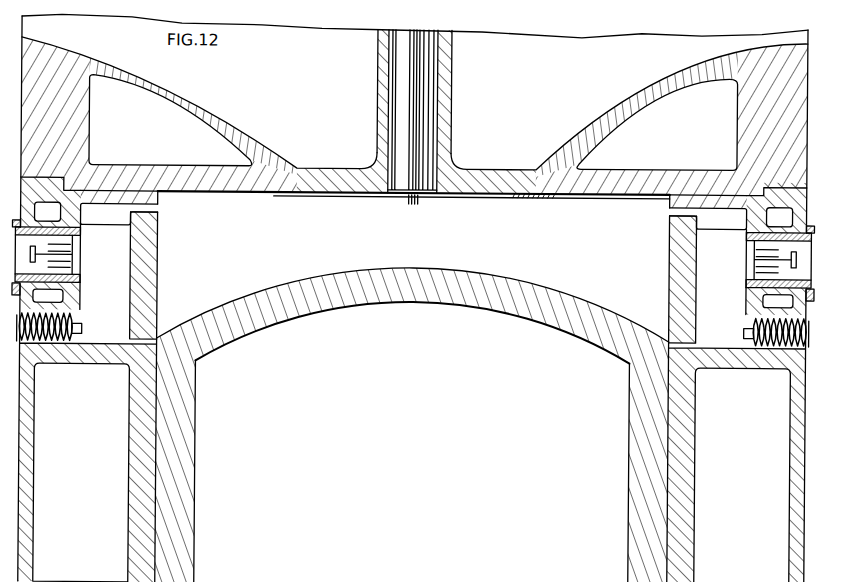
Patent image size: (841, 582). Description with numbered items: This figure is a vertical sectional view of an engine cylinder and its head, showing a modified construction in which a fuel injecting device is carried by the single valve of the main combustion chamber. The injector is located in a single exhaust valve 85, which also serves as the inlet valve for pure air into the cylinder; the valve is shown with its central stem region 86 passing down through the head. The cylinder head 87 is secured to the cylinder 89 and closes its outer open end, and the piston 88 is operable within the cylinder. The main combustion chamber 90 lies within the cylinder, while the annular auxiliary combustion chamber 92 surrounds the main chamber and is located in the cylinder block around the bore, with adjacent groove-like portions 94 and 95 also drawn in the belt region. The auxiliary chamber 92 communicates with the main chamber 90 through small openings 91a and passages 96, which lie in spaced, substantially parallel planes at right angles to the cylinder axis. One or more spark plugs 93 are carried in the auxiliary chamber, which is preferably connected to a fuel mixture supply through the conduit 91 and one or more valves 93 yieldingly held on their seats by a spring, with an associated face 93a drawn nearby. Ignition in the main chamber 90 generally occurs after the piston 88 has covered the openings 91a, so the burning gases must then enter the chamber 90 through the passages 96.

The exhaust valve 85 is at (453, 86).
The central bore 86 is at (423, 68).
The cylinder head 87 is at (569, 130).
The piston 88 is at (512, 279).
The cylinder 89 is at (688, 461).
The main combustion chamber 90 is at (413, 266).
The conduit 91 is at (27, 257).
The openings 91a is at (149, 342).
The annular auxiliary combustion chamber 92 is at (413, 260).
The spark plug 93 is at (413, 330).
The ring carrier face 93a is at (81, 274).
The ring groove 94 is at (109, 228).
The ring groove 95 is at (111, 218).
The passages 96 is at (147, 206).